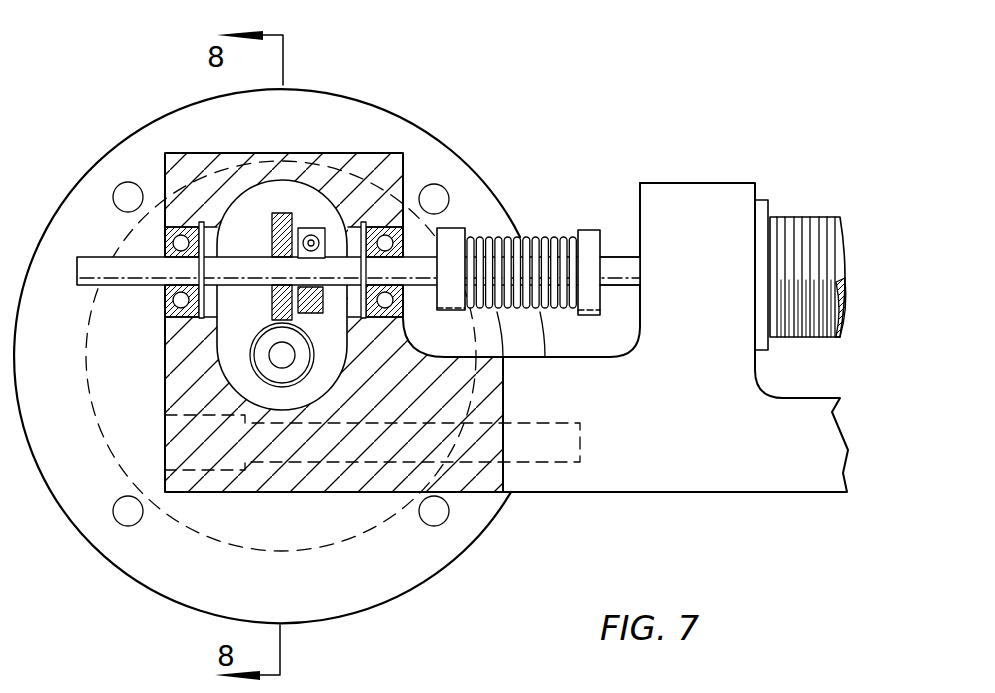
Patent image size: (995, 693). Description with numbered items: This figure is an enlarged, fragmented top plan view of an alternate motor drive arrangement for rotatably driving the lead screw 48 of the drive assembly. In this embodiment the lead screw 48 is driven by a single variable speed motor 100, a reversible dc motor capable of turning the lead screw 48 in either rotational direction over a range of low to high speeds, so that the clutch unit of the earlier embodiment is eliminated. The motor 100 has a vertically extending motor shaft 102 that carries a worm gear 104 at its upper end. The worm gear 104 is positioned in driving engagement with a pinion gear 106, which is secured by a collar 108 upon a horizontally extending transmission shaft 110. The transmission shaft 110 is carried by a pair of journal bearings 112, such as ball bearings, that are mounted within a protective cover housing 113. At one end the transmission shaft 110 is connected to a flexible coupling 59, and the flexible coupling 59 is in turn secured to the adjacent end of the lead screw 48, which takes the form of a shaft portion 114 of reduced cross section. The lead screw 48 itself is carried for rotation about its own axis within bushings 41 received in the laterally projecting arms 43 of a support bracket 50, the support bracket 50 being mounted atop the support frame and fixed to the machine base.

The bushings 41 is at (767, 203).
The laterally projecting arms 43 is at (700, 192).
The lead screw 48 is at (803, 219).
The support bracket 50 is at (663, 485).
The flexible coupling 59 is at (520, 250).
The motor 100 is at (428, 567).
The motor shaft 102 is at (282, 354).
The worm gear 104 is at (260, 382).
The pinion gear 106 is at (272, 248).
The collar 108 is at (310, 240).
The transmission shaft 110 is at (125, 290).
The journal bearings 112 is at (384, 243).
The protective cover housing 113 is at (238, 482).
The shaft portion 114 is at (610, 278).